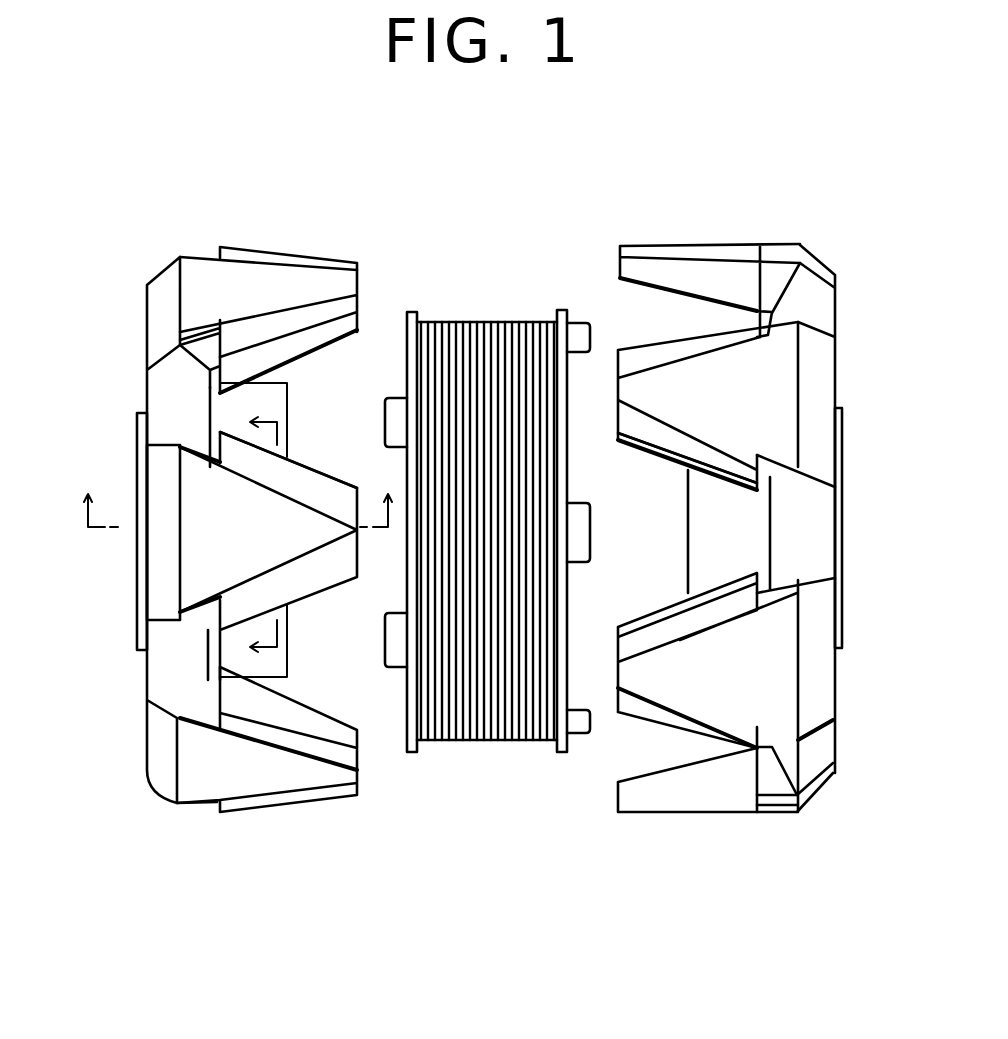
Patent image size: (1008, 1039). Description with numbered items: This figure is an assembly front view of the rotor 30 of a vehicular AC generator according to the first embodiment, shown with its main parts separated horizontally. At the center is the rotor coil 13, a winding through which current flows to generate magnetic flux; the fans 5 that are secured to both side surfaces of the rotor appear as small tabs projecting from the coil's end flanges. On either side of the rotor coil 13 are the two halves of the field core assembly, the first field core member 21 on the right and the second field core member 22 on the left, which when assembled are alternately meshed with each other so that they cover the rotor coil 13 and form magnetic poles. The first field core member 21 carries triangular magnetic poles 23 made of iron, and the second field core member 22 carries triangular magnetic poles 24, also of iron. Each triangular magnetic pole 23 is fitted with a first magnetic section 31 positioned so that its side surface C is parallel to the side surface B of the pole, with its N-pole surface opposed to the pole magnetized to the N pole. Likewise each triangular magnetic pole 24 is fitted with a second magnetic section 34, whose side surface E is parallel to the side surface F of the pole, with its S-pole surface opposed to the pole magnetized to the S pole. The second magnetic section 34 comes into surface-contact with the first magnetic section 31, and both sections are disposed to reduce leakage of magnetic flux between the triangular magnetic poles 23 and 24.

The fans 5 is at (577, 322).
The rotor coil 13 is at (468, 728).
The first field core member 21 is at (735, 571).
The second field core member 22 is at (220, 519).
The triangular magnetic pole 23 is at (680, 385).
The triangular magnetic pole 24 is at (218, 293).
The rotor 30 is at (735, 516).
The first magnetic section 31 is at (750, 447).
The second magnetic section 34 is at (312, 293).
The side surface B is at (773, 315).
The side surface C is at (669, 722).
The side surface E is at (320, 470).
The side surface F is at (208, 447).